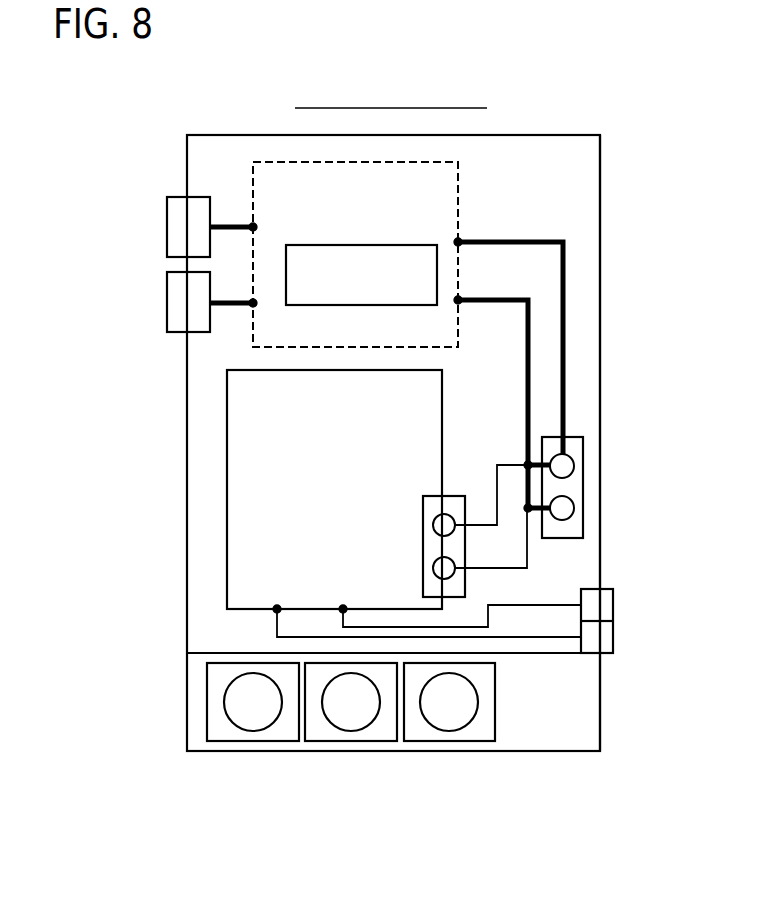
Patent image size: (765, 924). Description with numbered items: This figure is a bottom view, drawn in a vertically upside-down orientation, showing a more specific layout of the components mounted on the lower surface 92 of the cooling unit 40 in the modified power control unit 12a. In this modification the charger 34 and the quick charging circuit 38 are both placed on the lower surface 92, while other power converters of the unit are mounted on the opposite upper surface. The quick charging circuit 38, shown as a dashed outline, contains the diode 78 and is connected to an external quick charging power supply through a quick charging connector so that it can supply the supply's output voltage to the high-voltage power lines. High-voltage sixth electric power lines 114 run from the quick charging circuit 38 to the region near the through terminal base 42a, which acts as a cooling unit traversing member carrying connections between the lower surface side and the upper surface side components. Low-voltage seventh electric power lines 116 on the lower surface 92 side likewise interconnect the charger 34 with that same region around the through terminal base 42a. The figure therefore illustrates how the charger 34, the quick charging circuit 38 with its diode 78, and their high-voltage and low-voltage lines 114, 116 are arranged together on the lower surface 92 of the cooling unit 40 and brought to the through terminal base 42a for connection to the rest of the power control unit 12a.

The power control unit 12a is at (142, 100).
The quick charging circuit 38 is at (462, 171).
The diode 78 is at (361, 305).
The lower surface 92 is at (582, 228).
The charger 34 is at (227, 481).
The sixth electric power lines 114 is at (563, 350).
The seventh electric power lines 116 is at (527, 532).
The through terminal base 42a is at (583, 488).
The cooling unit 40 is at (600, 552).